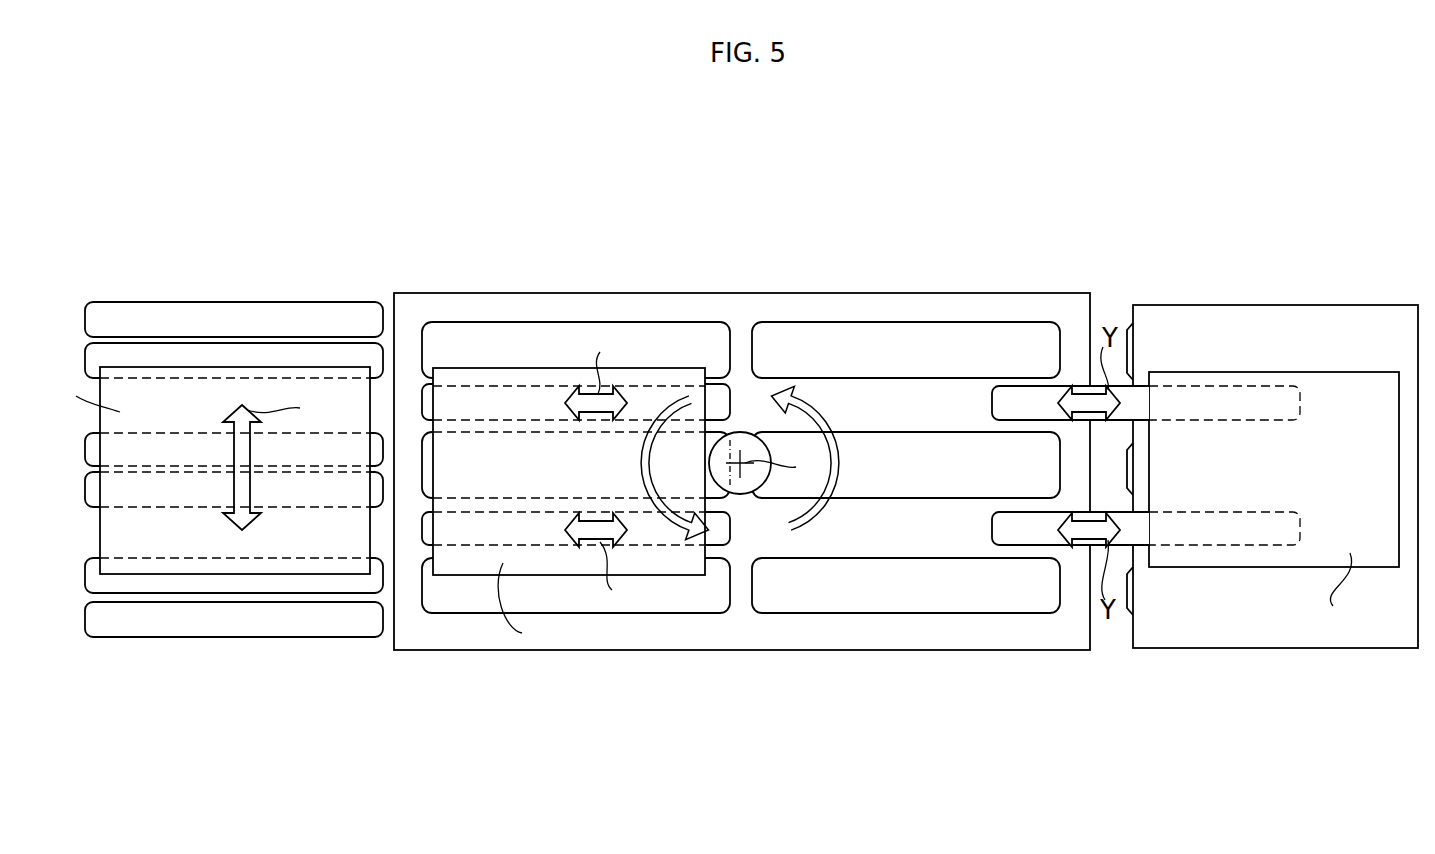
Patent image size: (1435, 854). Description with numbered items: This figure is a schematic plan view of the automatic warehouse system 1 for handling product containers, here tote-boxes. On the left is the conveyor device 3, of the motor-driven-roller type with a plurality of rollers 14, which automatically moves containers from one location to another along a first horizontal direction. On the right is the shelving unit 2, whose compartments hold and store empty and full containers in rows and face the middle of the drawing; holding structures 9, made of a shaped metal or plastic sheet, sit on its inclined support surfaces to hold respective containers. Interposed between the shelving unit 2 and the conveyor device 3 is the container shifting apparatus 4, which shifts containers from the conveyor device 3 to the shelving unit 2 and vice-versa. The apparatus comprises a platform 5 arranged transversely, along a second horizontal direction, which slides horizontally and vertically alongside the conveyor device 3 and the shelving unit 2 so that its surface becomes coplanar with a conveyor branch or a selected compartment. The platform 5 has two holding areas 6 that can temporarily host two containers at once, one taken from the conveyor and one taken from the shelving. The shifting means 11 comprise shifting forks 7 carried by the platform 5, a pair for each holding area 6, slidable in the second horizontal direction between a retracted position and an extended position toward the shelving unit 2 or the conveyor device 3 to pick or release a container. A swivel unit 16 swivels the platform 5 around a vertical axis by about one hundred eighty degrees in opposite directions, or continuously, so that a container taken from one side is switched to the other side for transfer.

The automatic warehouse system 1 is at (403, 708).
The shelving unit 2 is at (1272, 482).
The conveyor device 3 is at (213, 492).
The container shifting apparatus 4 is at (742, 492).
The platform 5 is at (740, 325).
The holding areas 6 is at (618, 302).
The shifting forks 7 is at (423, 404).
The holding structures 9 is at (1357, 323).
The shifting means 11 is at (733, 413).
The rollers 14 is at (208, 356).
The swivel unit 16 is at (745, 484).